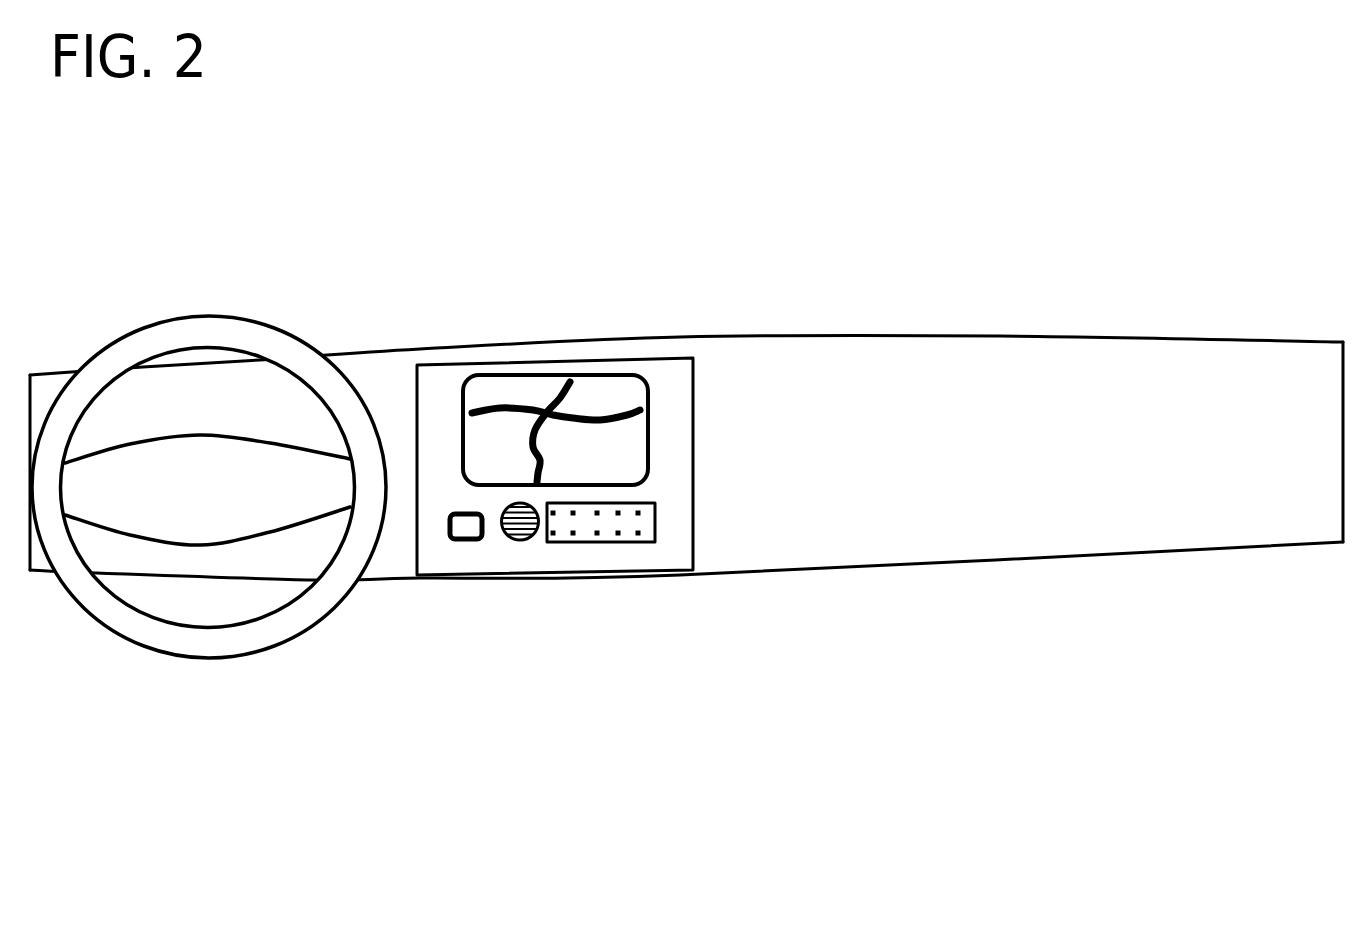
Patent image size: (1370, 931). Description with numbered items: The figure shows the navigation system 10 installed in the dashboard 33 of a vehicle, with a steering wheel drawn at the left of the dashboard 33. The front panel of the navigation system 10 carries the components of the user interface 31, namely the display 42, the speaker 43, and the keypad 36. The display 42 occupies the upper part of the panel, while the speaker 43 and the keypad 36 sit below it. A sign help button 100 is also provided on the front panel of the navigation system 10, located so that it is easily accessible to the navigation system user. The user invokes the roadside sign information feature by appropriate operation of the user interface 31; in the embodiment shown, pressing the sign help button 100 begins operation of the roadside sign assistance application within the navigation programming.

The navigation system 10 is at (705, 392).
The user interface 31 is at (663, 500).
The dashboard 33 is at (1019, 583).
The keypad 36 is at (667, 533).
The display 42 is at (451, 423).
The speaker 43 is at (518, 540).
The sign help button 100 is at (443, 530).